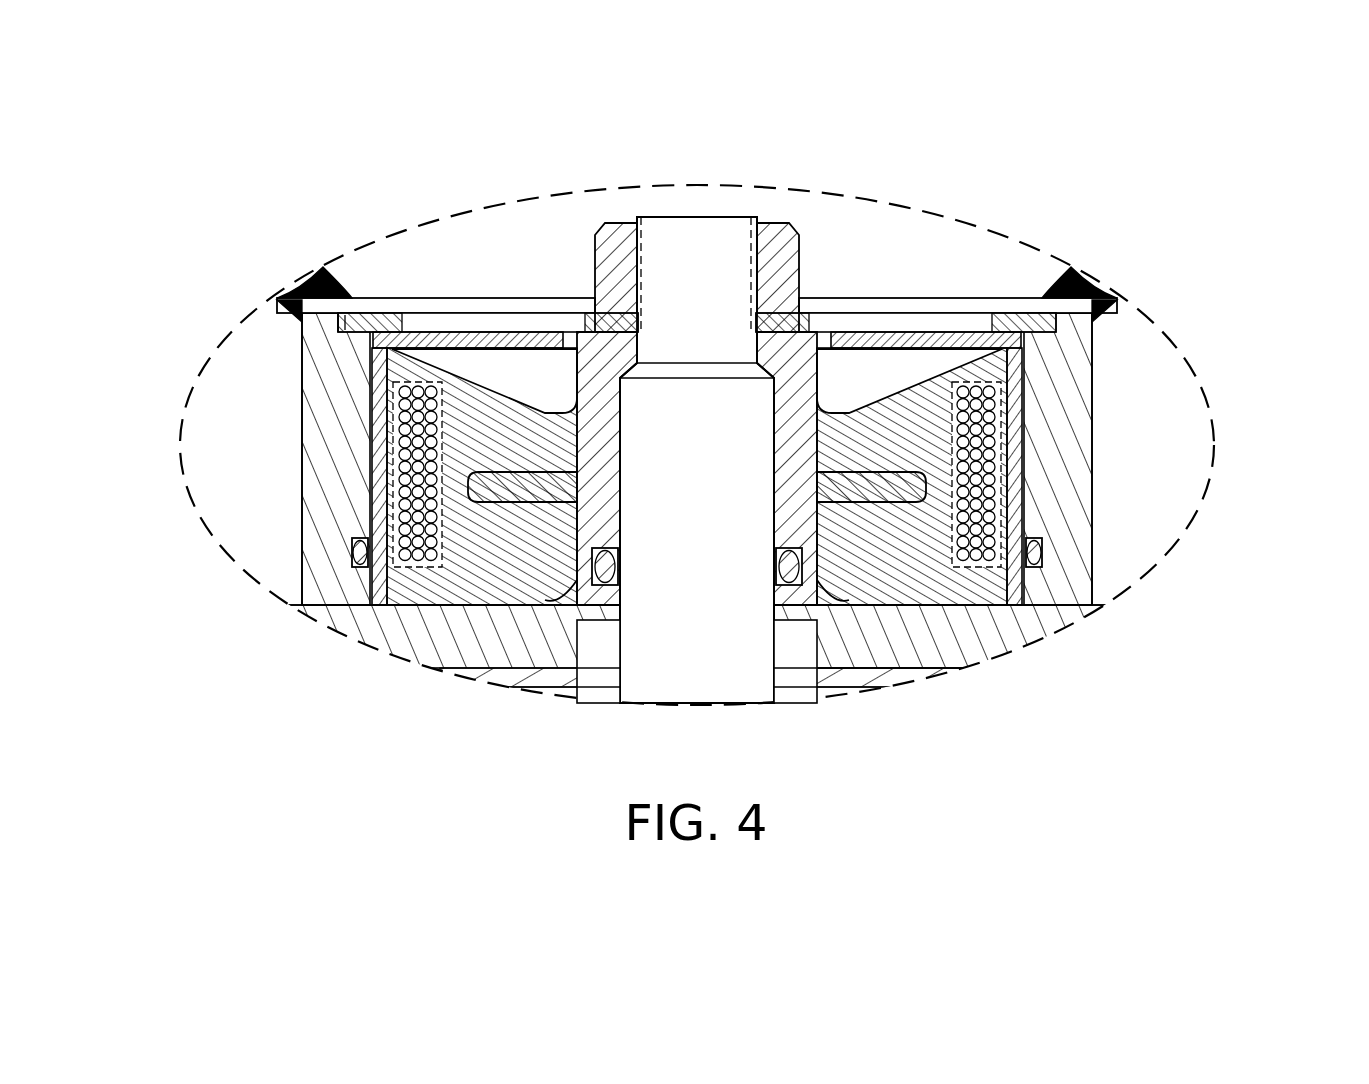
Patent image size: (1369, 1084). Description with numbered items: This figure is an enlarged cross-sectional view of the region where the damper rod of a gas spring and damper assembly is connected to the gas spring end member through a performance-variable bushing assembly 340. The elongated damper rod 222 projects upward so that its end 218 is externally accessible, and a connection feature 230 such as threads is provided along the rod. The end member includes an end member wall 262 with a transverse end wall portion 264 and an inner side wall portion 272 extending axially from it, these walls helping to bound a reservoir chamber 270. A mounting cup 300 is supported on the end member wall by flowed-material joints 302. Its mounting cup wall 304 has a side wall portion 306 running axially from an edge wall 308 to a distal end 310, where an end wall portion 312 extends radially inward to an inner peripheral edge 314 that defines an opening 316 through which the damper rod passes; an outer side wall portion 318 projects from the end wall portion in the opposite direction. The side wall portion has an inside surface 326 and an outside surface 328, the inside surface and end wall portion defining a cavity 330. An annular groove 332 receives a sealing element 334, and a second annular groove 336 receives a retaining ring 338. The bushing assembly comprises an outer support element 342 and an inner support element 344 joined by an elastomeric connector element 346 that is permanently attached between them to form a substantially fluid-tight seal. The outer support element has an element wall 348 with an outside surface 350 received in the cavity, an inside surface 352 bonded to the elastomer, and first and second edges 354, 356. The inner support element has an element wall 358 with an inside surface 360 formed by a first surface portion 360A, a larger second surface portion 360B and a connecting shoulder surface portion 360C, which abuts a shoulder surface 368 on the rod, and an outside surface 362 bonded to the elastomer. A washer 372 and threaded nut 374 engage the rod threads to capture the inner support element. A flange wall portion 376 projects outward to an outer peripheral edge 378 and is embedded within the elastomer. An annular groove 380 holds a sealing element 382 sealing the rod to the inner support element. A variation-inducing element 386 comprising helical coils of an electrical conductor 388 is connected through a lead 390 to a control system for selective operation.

The end of damper rod assembly 218 is at (778, 160).
The elongated damper rod 222 is at (745, 635).
The connection feature 230 is at (655, 215).
The end member wall 262 is at (297, 286).
The end wall portion 264 is at (1112, 292).
The reservoir chamber 270 is at (1172, 397).
The inner side wall portion 272 is at (1090, 312).
The mounting cup 300 is at (1102, 465).
The flowed-material joint 302 is at (1065, 300).
The mounting cup wall 304 is at (1057, 492).
The side wall portion 306 is at (312, 522).
The edge wall 308 is at (422, 298).
The distal end 310 is at (268, 568).
The end wall portion 312 is at (415, 640).
The inner peripheral edge 314 is at (540, 655).
The opening 316 is at (598, 633).
The outer side wall portion 318 is at (560, 668).
The inside surface 326 is at (380, 392).
The outside surface 328 is at (370, 420).
The cavity 330 is at (452, 325).
The annular groove 332 is at (1035, 552).
The sealing element 334 is at (1038, 568).
The annular groove 336 is at (327, 322).
The retaining ring 338 is at (372, 313).
The performance-variable bushing assembly 340 is at (365, 595).
The outer support element 342 is at (375, 438).
The inner support element 344 is at (592, 388).
The elastomeric connector element 346 is at (497, 398).
The element wall 348 is at (375, 450).
The outside surface 350 is at (350, 552).
The inside surface 352 is at (345, 360).
The first edge 354 is at (1025, 350).
The second edge 356 is at (1030, 602).
The element wall 358 is at (778, 458).
The inside surface 360 is at (768, 483).
The first surface portion 360A is at (750, 348).
The second surface portion 360B is at (778, 508).
The shoulder surface portion 360C is at (822, 432).
The outside surface 362 is at (773, 420).
The shoulder surface 368 is at (660, 373).
The washer 372 is at (597, 290).
The threaded nut 374 is at (780, 245).
The flange wall portion 376 is at (385, 483).
The outer peripheral edge 378 is at (390, 507).
The annular groove 380 is at (795, 612).
The sealing element 382 is at (820, 625).
The variation-inducing element 386 is at (995, 455).
The helical coils of an electrical conductor 388 is at (990, 432).
The lead 390 is at (975, 385).